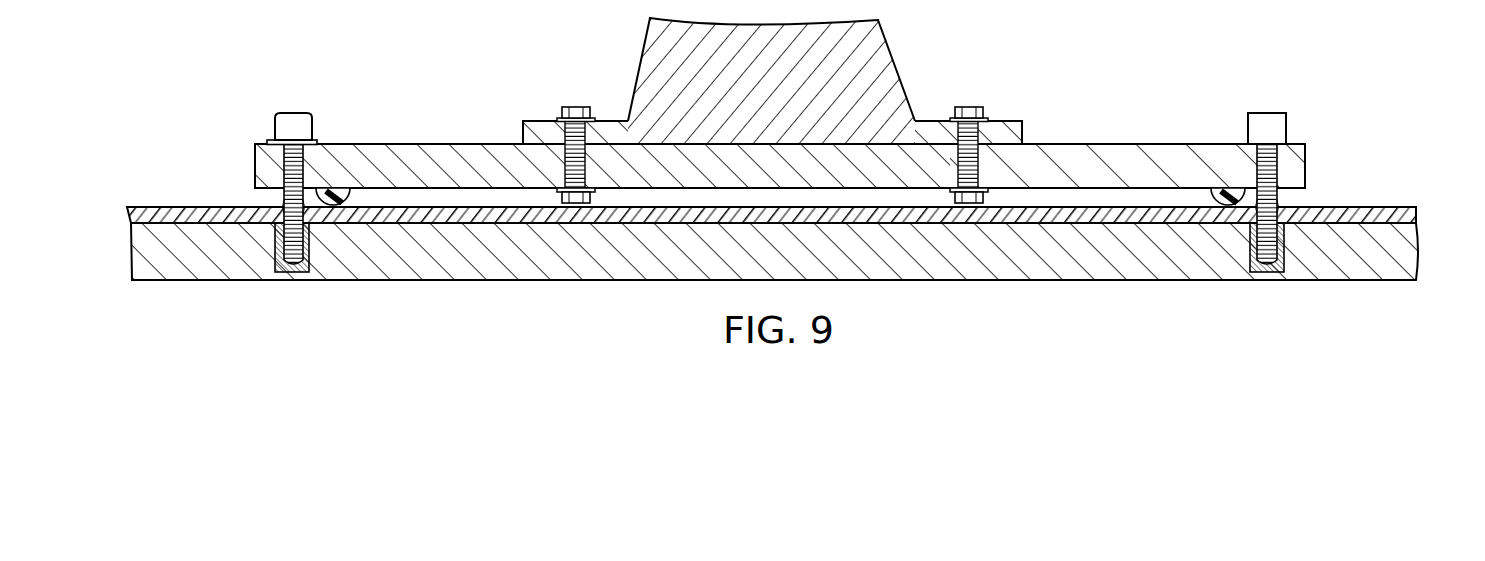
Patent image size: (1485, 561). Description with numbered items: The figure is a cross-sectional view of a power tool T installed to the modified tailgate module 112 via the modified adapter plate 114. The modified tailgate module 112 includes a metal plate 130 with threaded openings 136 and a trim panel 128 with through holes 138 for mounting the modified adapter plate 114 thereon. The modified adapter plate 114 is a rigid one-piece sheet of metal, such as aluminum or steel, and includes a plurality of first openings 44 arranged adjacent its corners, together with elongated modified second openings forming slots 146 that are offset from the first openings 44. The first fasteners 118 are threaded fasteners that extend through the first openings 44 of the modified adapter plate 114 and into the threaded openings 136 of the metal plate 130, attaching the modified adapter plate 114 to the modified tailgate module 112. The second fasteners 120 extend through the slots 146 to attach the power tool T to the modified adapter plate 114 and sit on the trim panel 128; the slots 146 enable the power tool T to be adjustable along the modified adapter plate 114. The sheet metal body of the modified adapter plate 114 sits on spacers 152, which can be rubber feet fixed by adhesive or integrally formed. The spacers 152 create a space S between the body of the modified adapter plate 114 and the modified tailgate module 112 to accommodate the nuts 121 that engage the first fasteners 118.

The modified tailgate module 112 is at (802, 164).
The modified adapter plate 114 is at (1134, 140).
The first fasteners 118 is at (293, 112).
The first openings 44 is at (292, 143).
The through holes 138 is at (292, 196).
The threaded openings 136 is at (292, 262).
The spacers 152 is at (334, 193).
The second fasteners 120 is at (577, 107).
The slots 146 is at (574, 146).
The nuts 121 is at (592, 199).
The trim panel 128 is at (1380, 212).
The metal plate 130 is at (1395, 246).
The power tool T is at (885, 33).
The space S is at (1085, 198).